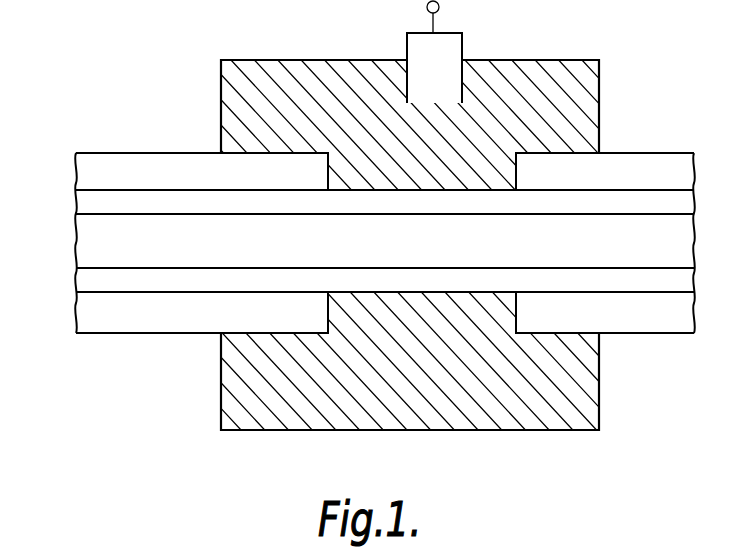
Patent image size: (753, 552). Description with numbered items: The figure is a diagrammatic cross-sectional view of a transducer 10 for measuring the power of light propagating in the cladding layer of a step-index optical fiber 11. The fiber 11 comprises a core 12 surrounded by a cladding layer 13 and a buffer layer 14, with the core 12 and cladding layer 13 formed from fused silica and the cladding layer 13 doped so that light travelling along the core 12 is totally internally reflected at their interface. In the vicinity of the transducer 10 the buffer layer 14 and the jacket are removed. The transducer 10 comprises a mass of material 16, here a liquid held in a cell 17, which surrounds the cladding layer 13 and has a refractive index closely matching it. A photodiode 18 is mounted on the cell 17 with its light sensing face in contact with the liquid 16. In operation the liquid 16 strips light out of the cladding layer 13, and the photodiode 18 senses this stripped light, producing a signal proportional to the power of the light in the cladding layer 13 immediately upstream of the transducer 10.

The transducer 10 is at (473, 457).
The optical fiber 11 is at (106, 372).
The core 12 is at (86, 232).
The cladding layer 13 is at (88, 275).
The buffer layer 14 is at (83, 309).
The mass of material 16 is at (237, 385).
The cell 17 is at (248, 431).
The photodiode 18 is at (418, 50).